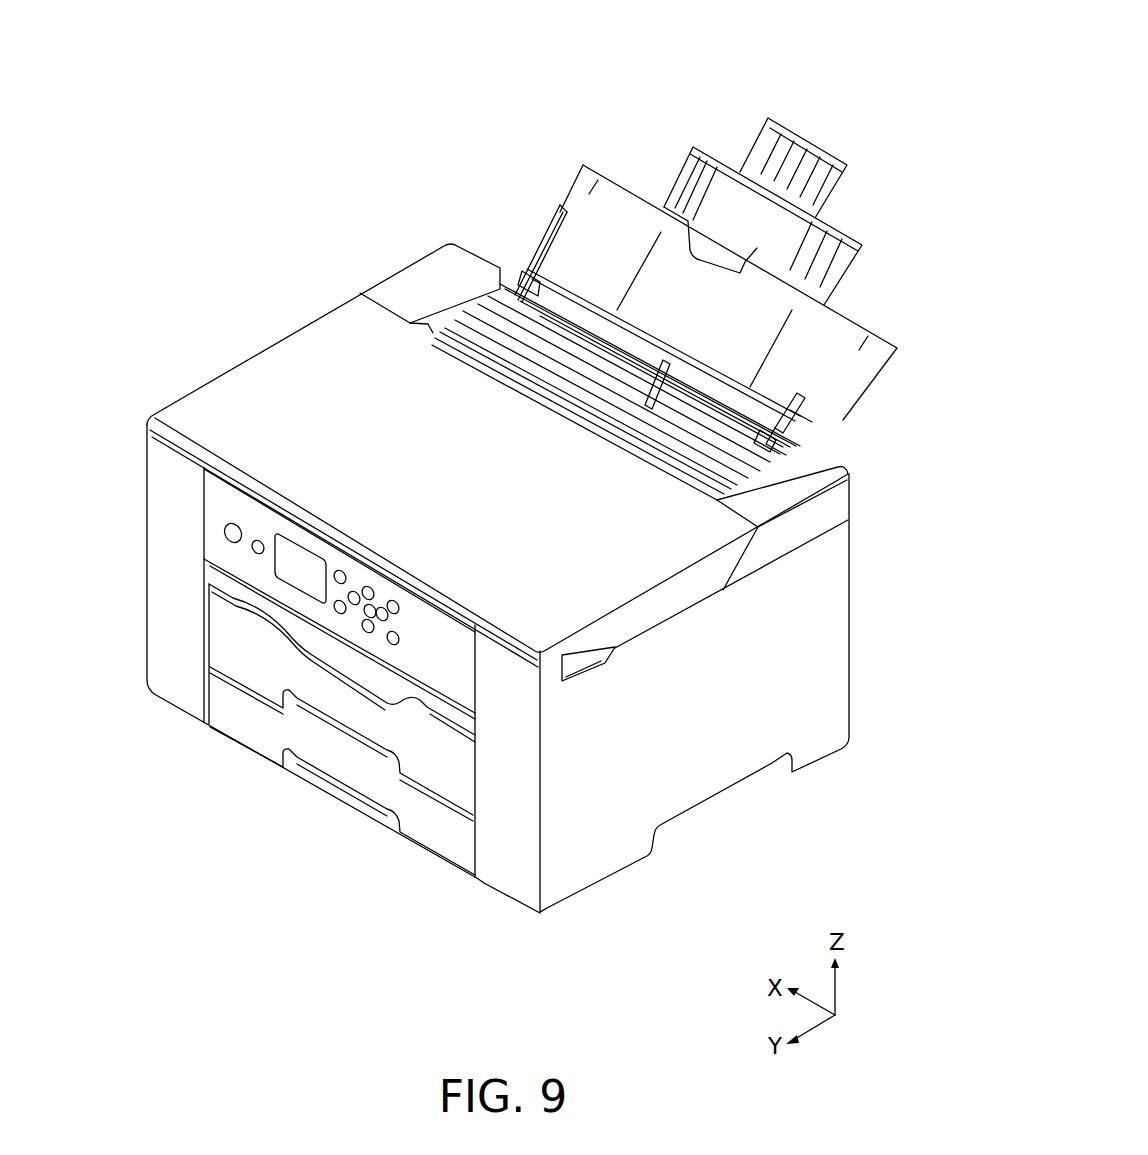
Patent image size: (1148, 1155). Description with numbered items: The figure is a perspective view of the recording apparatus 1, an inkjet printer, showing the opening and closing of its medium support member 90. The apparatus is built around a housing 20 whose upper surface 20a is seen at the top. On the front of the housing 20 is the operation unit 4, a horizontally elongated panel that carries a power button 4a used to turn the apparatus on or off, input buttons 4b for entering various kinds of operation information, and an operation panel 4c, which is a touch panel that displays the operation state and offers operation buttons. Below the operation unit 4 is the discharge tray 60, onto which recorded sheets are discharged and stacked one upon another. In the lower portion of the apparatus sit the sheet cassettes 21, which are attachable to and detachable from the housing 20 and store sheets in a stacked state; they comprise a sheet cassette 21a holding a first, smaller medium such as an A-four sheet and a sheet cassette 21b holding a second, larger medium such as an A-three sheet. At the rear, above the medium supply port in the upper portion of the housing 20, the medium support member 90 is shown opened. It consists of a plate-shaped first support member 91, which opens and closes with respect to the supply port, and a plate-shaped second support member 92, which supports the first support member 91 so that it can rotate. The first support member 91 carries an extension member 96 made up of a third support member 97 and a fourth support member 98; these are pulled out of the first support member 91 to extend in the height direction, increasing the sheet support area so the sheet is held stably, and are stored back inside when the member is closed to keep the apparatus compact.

The recording apparatus 1 is at (766, 67).
The housing 20 is at (838, 632).
The top surface of housing 20a is at (258, 367).
The operation unit 4 is at (205, 514).
The power button 4a is at (224, 537).
The input buttons 4b is at (364, 592).
The operation panel 4c is at (297, 556).
The discharge tray 60 is at (236, 617).
The sheet cassettes 21 is at (327, 838).
The sheet cassette 21a is at (237, 695).
The sheet cassette 21b is at (307, 750).
The medium support member 90 is at (898, 261).
The first support member 91 is at (846, 334).
The second support member 92 is at (727, 452).
The extension member 96 is at (896, 110).
The third support member 97 is at (848, 245).
The fourth support member 98 is at (838, 156).